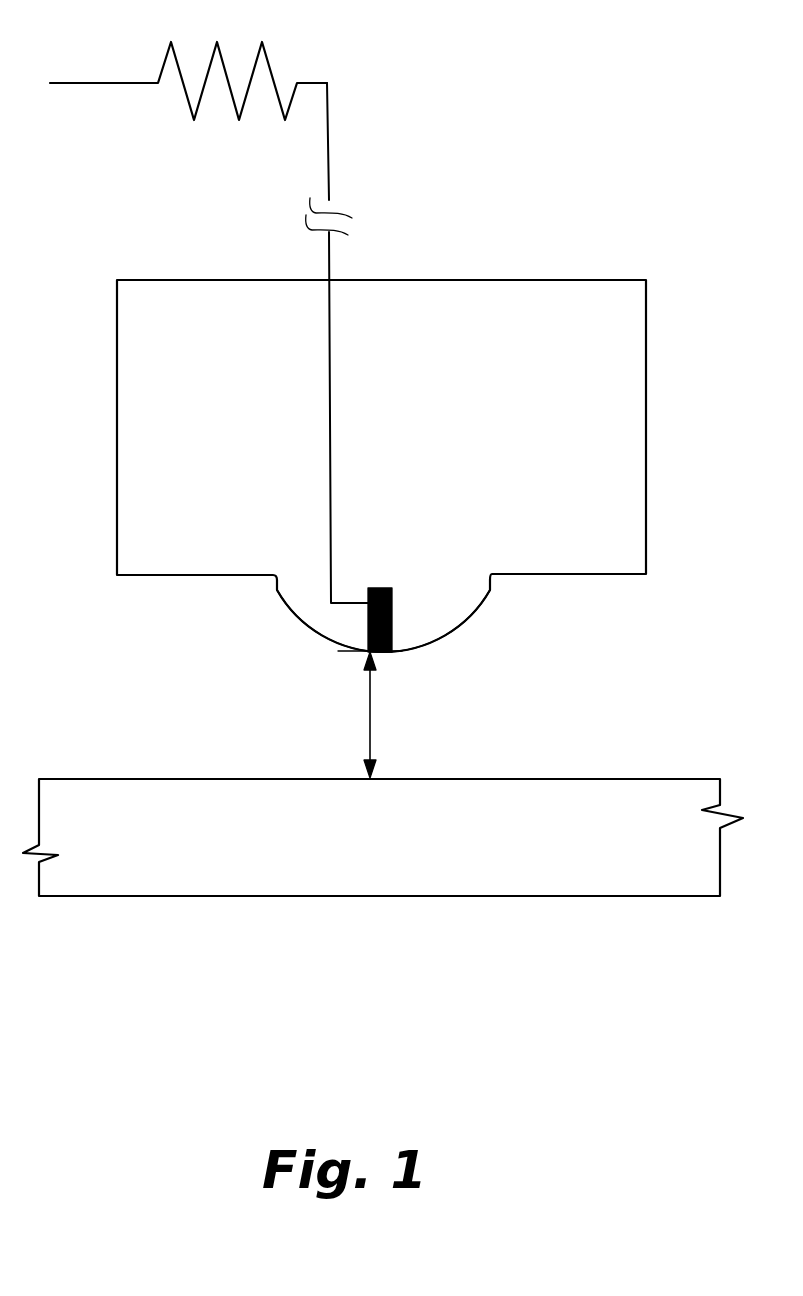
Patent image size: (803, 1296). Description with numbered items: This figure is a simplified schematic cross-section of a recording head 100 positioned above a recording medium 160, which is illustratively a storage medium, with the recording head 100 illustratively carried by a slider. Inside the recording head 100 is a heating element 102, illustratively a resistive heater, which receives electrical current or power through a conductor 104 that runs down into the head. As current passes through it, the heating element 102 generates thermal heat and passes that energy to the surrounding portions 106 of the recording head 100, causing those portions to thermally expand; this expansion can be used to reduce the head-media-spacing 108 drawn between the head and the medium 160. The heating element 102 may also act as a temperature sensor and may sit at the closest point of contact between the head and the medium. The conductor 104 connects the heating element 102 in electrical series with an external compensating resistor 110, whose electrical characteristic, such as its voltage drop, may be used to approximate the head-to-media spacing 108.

The recording head 100 is at (633, 413).
The heating element 102 is at (392, 623).
The conductor 104 is at (325, 305).
The surrounding portions 106 is at (313, 616).
The head-media-spacing 108 is at (368, 706).
The compensating resistor 110 is at (268, 55).
The recording medium 160 is at (651, 779).